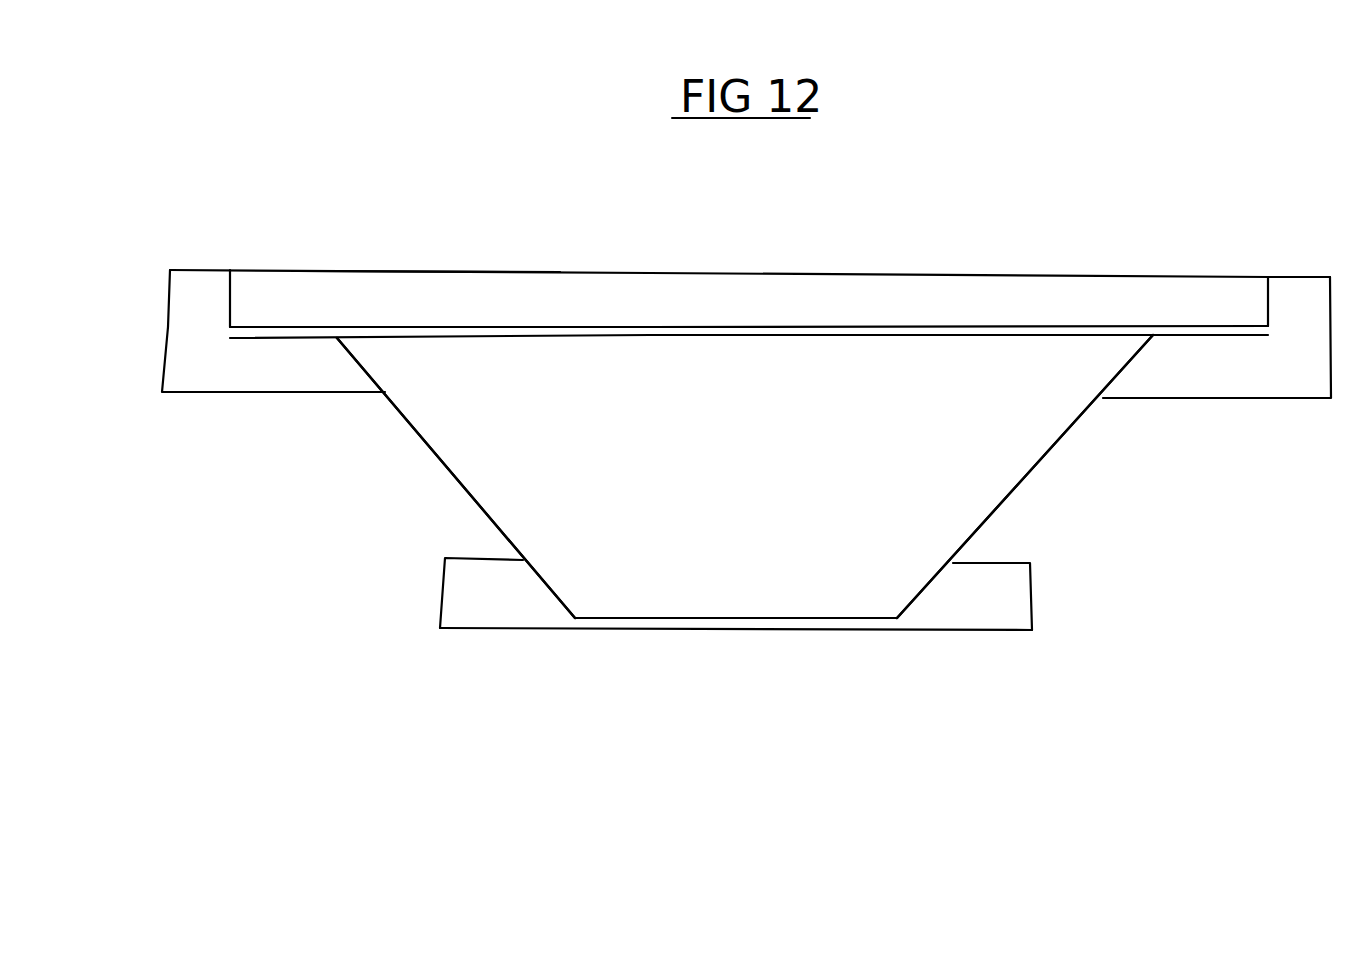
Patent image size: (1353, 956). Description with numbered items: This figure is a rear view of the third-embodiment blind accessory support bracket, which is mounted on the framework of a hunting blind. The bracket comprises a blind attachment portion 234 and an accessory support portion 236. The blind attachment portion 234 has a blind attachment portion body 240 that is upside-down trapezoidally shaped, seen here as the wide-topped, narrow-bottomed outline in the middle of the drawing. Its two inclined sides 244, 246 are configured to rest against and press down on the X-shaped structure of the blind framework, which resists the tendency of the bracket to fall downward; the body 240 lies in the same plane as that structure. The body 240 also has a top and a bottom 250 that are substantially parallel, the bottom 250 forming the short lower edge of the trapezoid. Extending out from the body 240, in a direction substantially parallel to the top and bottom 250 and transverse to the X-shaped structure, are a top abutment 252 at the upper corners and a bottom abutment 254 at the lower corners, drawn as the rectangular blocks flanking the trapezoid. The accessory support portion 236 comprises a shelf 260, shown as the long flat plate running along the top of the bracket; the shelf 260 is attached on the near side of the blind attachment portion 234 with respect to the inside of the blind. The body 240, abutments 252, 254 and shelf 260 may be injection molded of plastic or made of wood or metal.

The accessory support portion 236 is at (313, 268).
The shelf 260 is at (1020, 291).
The top abutment 252 is at (170, 327).
The side 244 is at (415, 432).
The blind attachment portion body 240 is at (458, 480).
The blind attachment portion 234 is at (1020, 490).
The side 246 is at (993, 516).
The bottom 250 is at (750, 622).
The bottom abutment 254 is at (498, 620).